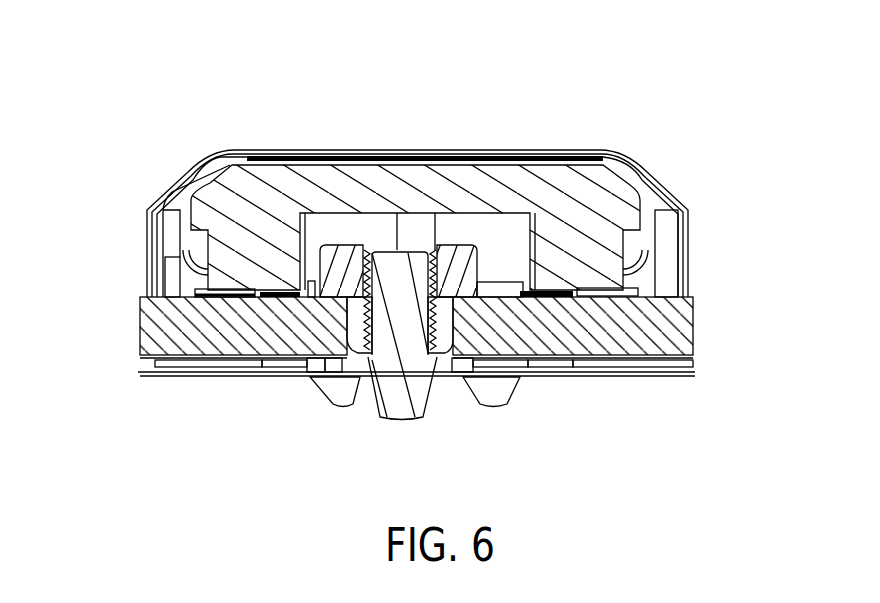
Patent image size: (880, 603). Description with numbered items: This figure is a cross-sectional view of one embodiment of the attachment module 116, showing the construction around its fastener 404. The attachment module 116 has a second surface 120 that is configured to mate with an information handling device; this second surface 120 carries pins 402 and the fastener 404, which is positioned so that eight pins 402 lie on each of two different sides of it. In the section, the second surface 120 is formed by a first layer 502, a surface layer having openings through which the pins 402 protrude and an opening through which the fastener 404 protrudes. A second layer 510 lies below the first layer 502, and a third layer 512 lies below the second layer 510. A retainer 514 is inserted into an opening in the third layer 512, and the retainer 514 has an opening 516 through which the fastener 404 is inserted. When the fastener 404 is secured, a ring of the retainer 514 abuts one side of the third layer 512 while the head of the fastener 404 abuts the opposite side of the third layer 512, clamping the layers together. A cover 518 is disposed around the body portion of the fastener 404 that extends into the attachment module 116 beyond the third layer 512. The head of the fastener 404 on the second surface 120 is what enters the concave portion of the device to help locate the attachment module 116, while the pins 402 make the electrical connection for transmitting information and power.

The attachment module 116 is at (137, 92).
The second surface 120 is at (647, 377).
The pins 402 is at (333, 405).
The fastener 404 is at (397, 398).
The first layer 502 is at (150, 380).
The second layer 510 is at (150, 364).
The third layer 512 is at (140, 326).
The retainer 514 is at (462, 260).
The opening 516 is at (458, 335).
The cover 518 is at (597, 202).